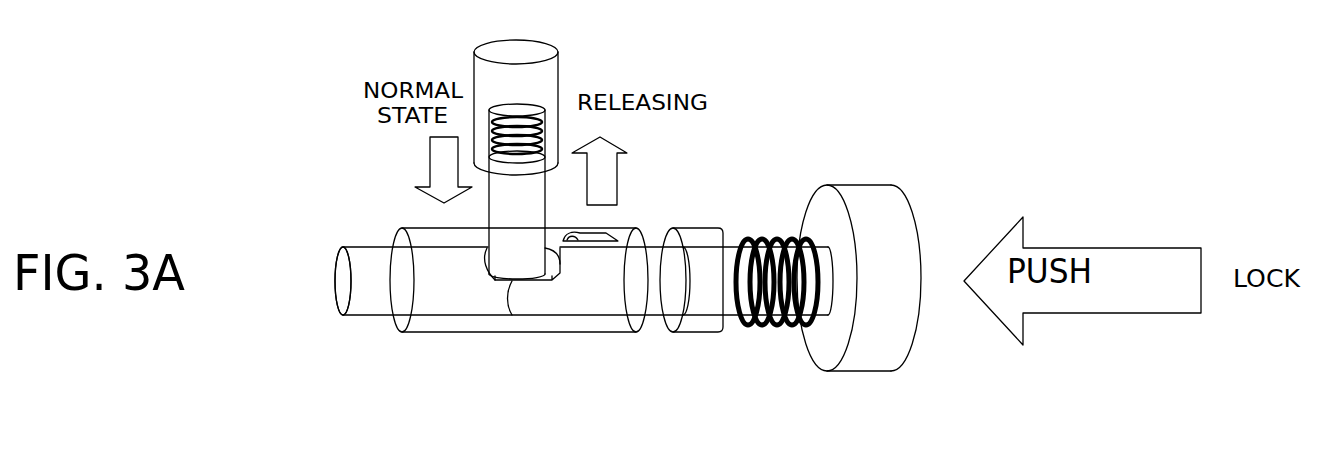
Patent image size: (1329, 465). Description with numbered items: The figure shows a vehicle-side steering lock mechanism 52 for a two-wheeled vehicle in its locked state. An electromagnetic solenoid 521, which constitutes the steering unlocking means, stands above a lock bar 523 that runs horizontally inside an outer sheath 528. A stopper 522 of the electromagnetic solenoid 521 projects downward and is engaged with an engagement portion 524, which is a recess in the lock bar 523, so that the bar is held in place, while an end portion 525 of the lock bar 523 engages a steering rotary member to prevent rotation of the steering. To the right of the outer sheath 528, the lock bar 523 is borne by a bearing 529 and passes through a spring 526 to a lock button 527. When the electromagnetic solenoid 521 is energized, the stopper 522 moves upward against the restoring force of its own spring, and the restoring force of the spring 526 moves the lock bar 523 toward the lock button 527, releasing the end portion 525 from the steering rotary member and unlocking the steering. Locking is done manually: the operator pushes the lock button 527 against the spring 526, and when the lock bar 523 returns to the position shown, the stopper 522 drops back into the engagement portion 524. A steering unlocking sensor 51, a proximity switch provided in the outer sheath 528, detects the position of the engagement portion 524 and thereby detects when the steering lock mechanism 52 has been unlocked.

The steering unlocking sensor 51 is at (593, 229).
The steering lock mechanism 52 is at (697, 456).
The electromagnetic solenoid 521 is at (550, 85).
The stopper 522 is at (525, 205).
The lock bar 523 is at (477, 330).
The engagement portion 524 is at (512, 282).
The end portion 525 is at (347, 282).
The spring 526 is at (784, 327).
The lock button 527 is at (850, 197).
The outer sheath 528 is at (420, 229).
The bearing 529 is at (690, 333).